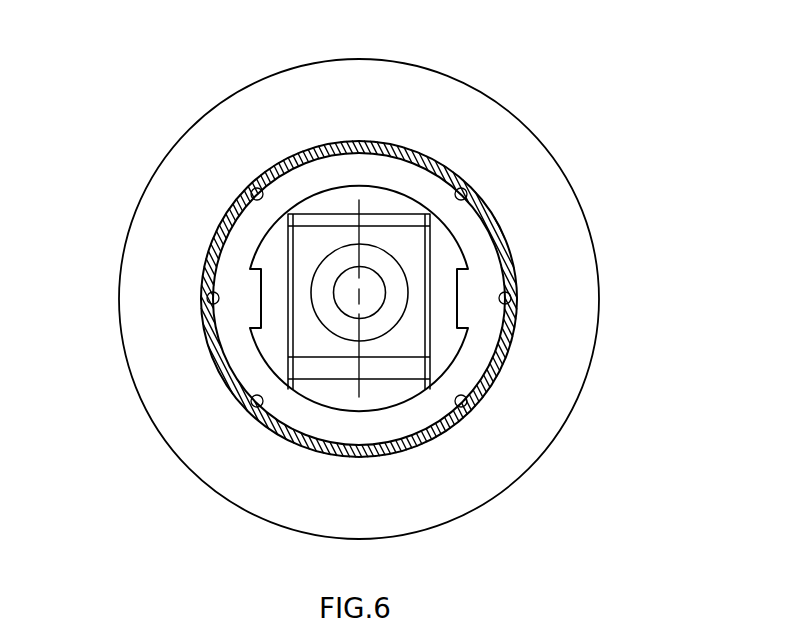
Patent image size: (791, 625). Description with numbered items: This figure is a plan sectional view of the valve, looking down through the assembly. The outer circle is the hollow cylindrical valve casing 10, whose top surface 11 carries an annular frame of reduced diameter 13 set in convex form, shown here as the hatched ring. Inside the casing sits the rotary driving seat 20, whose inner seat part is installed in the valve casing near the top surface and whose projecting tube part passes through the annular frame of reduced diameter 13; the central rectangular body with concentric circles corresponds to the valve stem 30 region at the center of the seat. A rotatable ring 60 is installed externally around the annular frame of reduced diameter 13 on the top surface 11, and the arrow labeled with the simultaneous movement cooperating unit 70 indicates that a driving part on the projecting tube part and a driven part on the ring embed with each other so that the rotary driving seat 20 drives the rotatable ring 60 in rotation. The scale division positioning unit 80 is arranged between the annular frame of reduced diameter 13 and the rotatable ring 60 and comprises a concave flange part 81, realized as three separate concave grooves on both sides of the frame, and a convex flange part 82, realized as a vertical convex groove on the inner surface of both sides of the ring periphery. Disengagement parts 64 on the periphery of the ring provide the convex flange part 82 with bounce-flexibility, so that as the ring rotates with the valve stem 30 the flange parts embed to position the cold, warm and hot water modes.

The valve casing 10 is at (598, 337).
The top surface 11 is at (552, 403).
The annular frame of reduced diameter 13 is at (383, 168).
The rotary driving seat 20 is at (468, 223).
The valve stem 30 is at (343, 214).
The rotatable ring 60 is at (555, 233).
The disengagement part 64 is at (512, 318).
The simultaneous movement cooperating unit 70 is at (281, 305).
The scale division positioning unit 80 is at (269, 285).
The concave flange part 81 is at (250, 188).
The convex flange part 82 is at (216, 295).